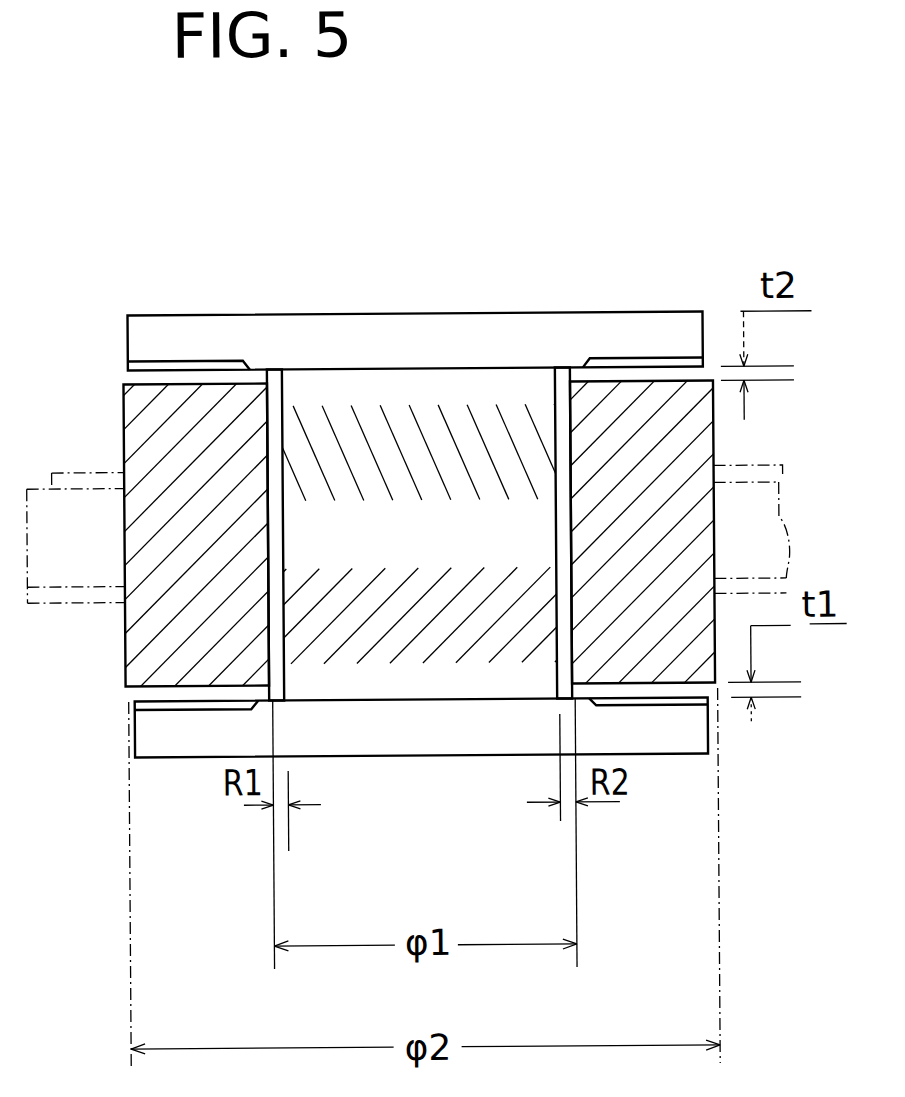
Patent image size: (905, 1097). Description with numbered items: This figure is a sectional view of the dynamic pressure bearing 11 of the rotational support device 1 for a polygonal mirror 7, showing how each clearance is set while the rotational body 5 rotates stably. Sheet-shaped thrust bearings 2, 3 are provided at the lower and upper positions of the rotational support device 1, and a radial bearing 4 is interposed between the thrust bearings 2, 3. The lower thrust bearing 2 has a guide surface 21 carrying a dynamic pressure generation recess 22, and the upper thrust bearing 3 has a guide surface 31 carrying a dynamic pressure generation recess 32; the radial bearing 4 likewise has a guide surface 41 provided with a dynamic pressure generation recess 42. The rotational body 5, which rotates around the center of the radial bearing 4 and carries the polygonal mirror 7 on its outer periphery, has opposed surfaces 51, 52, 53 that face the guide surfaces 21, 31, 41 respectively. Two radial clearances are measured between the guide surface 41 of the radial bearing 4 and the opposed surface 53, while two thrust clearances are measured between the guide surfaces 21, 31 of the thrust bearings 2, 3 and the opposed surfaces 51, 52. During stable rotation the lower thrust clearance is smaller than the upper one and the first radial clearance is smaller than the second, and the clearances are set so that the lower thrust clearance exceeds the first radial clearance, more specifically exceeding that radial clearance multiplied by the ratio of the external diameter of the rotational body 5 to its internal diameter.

The dynamic pressure bearing 11 is at (110, 299).
The thrust bearing 3 is at (372, 325).
The dynamic pressure generation recess 32 is at (191, 355).
The opposed surface 52 is at (656, 393).
The guide surface 31 is at (166, 371).
The rotational body 5 is at (608, 393).
The guide surface 41 is at (285, 533).
The opposed surface 53 is at (556, 536).
The radial bearing 4 is at (406, 505).
The dynamic pressure generation recess 42 is at (438, 583).
The rotational support device 1 is at (666, 745).
The thrust bearing 2 is at (361, 732).
The guide surface 21 is at (141, 701).
The dynamic pressure generation recess 22 is at (146, 710).
The opposed surface 51 is at (612, 692).
The polygonal mirror 7 is at (768, 466).